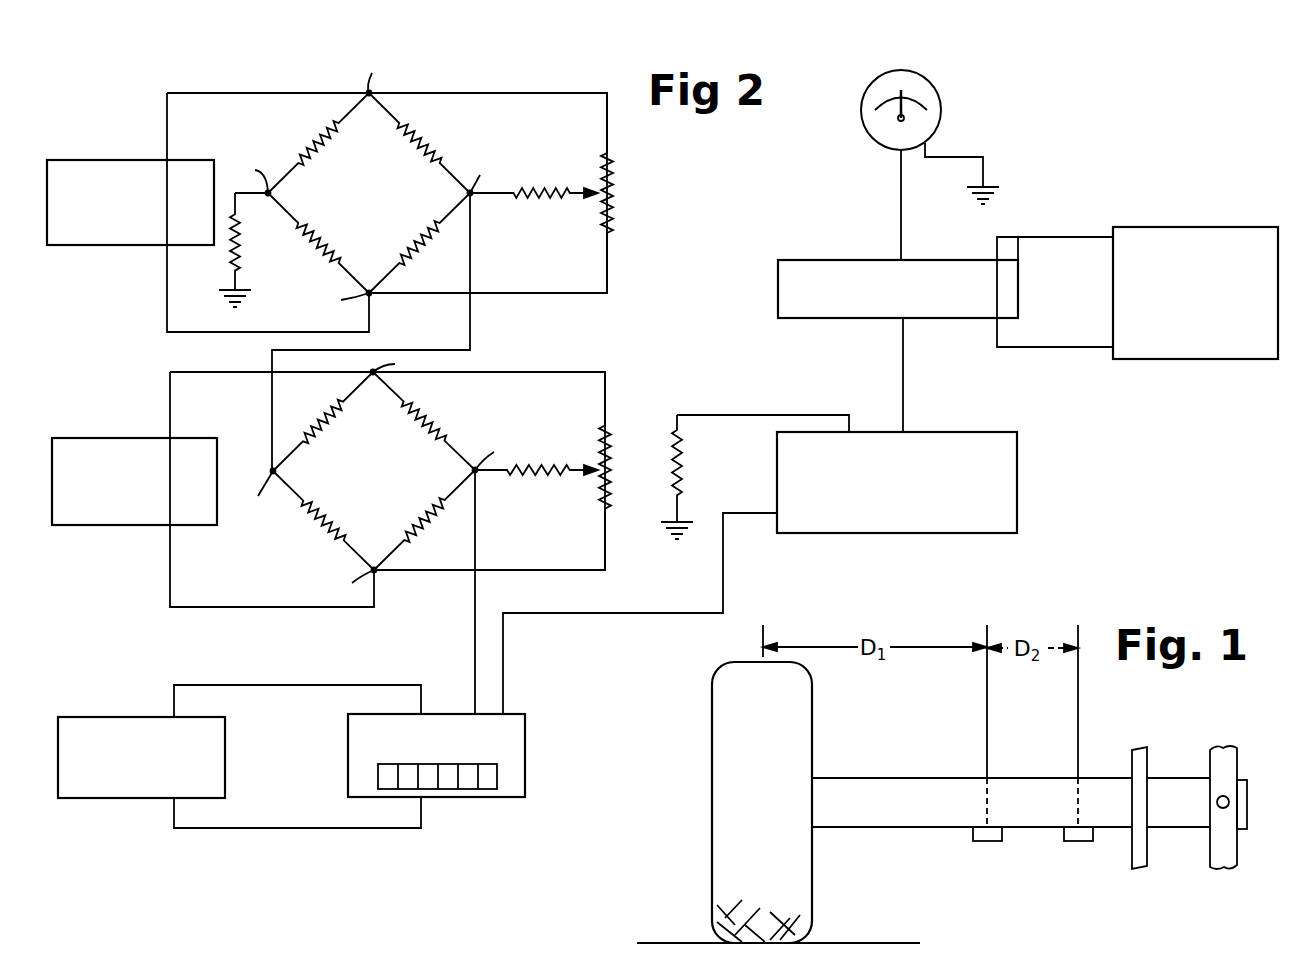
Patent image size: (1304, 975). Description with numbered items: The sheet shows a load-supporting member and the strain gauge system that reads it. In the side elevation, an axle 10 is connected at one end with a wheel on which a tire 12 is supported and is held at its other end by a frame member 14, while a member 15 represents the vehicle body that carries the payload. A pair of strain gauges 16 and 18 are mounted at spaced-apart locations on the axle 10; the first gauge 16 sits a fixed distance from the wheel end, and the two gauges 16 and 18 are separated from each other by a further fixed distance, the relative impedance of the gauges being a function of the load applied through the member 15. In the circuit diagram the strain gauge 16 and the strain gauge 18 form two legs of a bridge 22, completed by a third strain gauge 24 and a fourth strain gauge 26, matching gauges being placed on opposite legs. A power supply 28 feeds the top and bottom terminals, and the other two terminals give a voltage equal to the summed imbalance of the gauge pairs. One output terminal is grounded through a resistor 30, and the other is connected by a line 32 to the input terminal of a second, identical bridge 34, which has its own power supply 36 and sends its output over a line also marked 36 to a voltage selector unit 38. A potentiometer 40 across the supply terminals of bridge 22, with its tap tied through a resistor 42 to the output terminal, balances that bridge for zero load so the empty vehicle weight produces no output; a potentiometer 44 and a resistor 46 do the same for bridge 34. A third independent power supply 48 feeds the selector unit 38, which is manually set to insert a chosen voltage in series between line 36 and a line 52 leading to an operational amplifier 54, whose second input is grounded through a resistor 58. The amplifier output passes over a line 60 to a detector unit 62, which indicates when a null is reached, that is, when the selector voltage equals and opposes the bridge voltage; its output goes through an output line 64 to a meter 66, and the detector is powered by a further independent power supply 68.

In FIG. 1, the axle 10 is at (877, 783).
In FIG. 1, the tire 12 is at (802, 728).
In FIG. 1, the frame member 14 is at (1232, 755).
In FIG. 1, the member 15 is at (1140, 765).
In FIG. 2, the strain gauge 16 is at (414, 136).
In FIG. 1, the strain gauge 16 is at (985, 843).
In FIG. 2, the strain gauge 18 is at (408, 258).
In FIG. 1, the strain gauge 18 is at (1075, 843).
In FIG. 2, the bridge 22 is at (343, 214).
In FIG. 2, the G1 strain gauge 24 is at (328, 256).
In FIG. 2, the G2 strain gauge 26 is at (302, 150).
In FIG. 2, the power supply 28 is at (93, 168).
In FIG. 2, the resistor 30 is at (231, 258).
In FIG. 2, the line 32 is at (470, 323).
In FIG. 2, the second bridge 34 is at (354, 484).
In FIG. 2, the power supply 36 is at (120, 447).
In FIG. 2, the voltage selector unit 38 is at (502, 790).
In FIG. 2, the potentiometer 40 is at (606, 218).
In FIG. 2, the resistor 42 is at (539, 198).
In FIG. 2, the potentiometer 44 is at (608, 436).
In FIG. 2, the resistor 46 is at (545, 472).
In FIG. 2, the power supply 48 is at (139, 723).
In FIG. 2, the line 52 is at (503, 675).
In FIG. 2, the operational amplifier 54 is at (1007, 508).
In FIG. 2, the resistor 58 is at (682, 458).
In FIG. 2, the line 60 is at (903, 386).
In FIG. 2, the detector unit 62 is at (832, 266).
In FIG. 2, the output line 64 is at (901, 201).
In FIG. 2, the meter 66 is at (880, 137).
In FIG. 2, the power supply 68 is at (1178, 238).